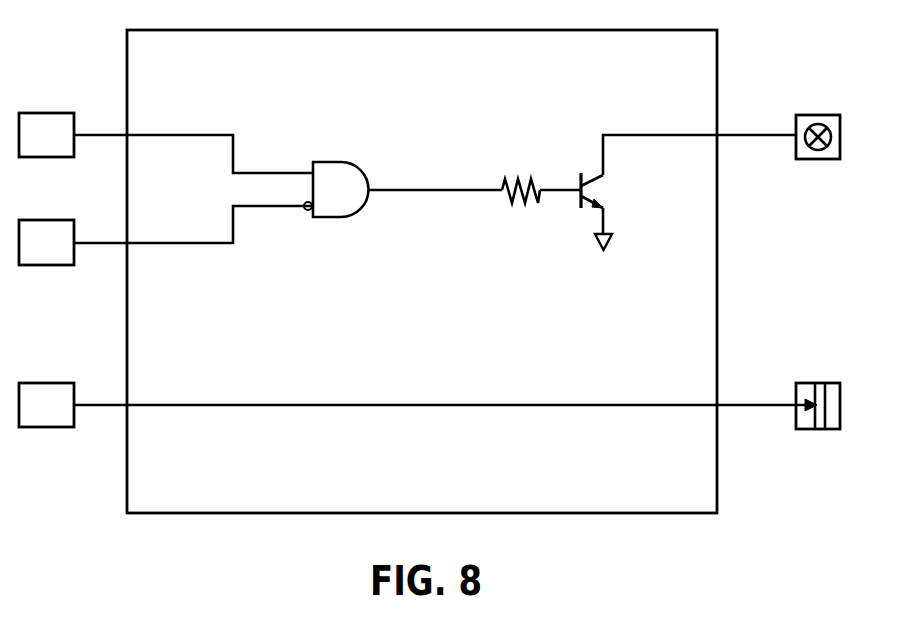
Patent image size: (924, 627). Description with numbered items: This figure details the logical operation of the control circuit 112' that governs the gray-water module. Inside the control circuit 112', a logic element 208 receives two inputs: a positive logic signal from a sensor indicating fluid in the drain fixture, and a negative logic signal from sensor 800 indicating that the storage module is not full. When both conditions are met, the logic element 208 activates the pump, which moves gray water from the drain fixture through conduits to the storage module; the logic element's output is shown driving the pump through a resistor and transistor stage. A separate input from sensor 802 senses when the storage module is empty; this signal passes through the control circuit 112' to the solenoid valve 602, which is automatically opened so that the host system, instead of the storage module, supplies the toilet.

The control circuit 112' is at (422, 271).
The sensor 800 is at (67, 257).
The sensor 802 is at (67, 419).
The logic element 208 is at (358, 203).
The solenoid valve 602 is at (816, 383).